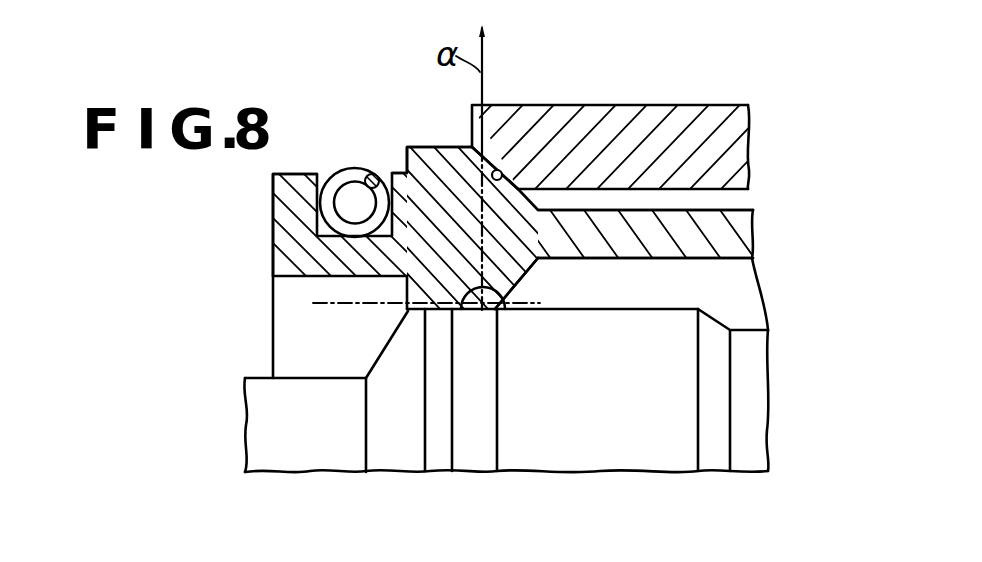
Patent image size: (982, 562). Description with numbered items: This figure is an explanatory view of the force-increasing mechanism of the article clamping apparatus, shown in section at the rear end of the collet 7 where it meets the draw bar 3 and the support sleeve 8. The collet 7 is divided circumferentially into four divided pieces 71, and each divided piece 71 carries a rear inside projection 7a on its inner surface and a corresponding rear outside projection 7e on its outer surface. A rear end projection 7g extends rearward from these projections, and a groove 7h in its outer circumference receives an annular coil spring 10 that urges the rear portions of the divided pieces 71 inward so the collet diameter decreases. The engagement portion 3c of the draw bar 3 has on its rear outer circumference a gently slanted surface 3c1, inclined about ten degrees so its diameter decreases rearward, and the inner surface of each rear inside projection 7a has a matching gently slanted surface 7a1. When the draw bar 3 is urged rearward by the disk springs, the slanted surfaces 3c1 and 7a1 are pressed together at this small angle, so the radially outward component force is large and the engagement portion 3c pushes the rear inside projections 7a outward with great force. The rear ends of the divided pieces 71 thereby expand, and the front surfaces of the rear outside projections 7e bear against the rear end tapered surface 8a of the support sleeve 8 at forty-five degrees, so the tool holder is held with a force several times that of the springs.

The draw bar 3 is at (312, 442).
The engagement portion 3c is at (543, 438).
The gently slanted surface 3c1 is at (473, 312).
The collet 7 is at (636, 252).
The rear inside projection 7a is at (440, 282).
The gently slanted surface 7a1 is at (498, 300).
The rear outside projection 7e is at (398, 188).
The rear end projection 7g is at (272, 278).
The groove 7h is at (326, 240).
The divided piece 71 is at (723, 238).
The support sleeve 8 is at (638, 130).
The rear end tapered surface 8a is at (501, 170).
The annular coil spring 10 is at (357, 167).